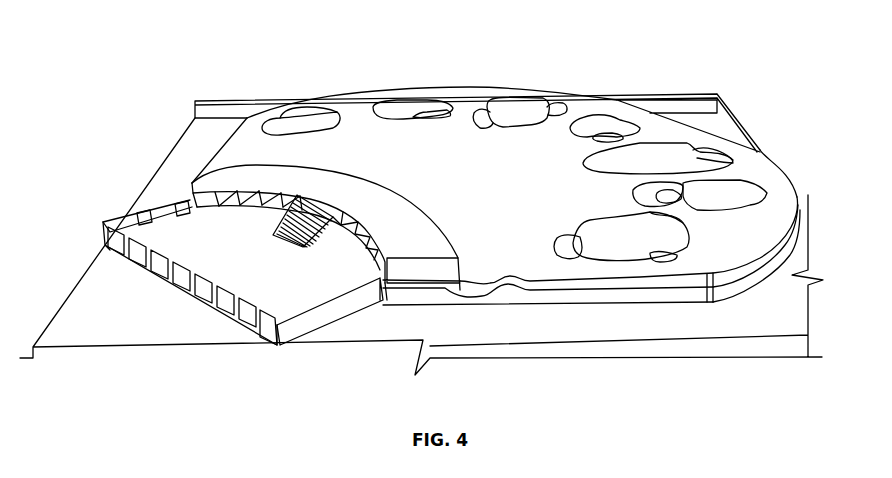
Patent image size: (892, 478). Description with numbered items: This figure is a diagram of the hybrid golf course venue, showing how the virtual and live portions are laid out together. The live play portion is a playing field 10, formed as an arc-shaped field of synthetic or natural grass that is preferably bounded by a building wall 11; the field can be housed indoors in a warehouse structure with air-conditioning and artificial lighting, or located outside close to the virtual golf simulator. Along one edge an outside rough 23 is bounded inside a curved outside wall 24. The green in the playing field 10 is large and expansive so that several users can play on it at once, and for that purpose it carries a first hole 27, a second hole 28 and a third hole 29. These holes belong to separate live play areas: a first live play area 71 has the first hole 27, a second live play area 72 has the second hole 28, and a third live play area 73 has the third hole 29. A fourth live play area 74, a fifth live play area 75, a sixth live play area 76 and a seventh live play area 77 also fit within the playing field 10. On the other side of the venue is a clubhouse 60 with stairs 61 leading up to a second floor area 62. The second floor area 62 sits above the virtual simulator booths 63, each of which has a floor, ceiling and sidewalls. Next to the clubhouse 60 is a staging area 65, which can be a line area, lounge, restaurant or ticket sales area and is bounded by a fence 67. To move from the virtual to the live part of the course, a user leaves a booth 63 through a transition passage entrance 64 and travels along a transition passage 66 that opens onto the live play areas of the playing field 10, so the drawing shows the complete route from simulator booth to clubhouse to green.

The playing field 10 is at (162, 40).
The building wall 11 is at (690, 106).
The outside rough 23 is at (586, 112).
The curved outside wall 24 is at (757, 147).
The first hole 27 is at (312, 120).
The second hole 28 is at (426, 114).
The third hole 29 is at (540, 108).
The clubhouse 60 is at (214, 172).
The stairs 61 is at (303, 226).
The second floor area 62 is at (432, 249).
The virtual simulator booths 63 is at (203, 203).
The transition passage entrance 64 is at (320, 228).
The staging area 65 is at (247, 272).
The transition passage 66 is at (413, 198).
The fence 67 is at (363, 302).
The first live play area 71 is at (275, 122).
The second live play area 72 is at (390, 107).
The third live play area 73 is at (500, 109).
The fourth live play area 74 is at (623, 136).
The fifth live play area 75 is at (760, 152).
The sixth live play area 76 is at (763, 190).
The seventh live play area 77 is at (620, 250).